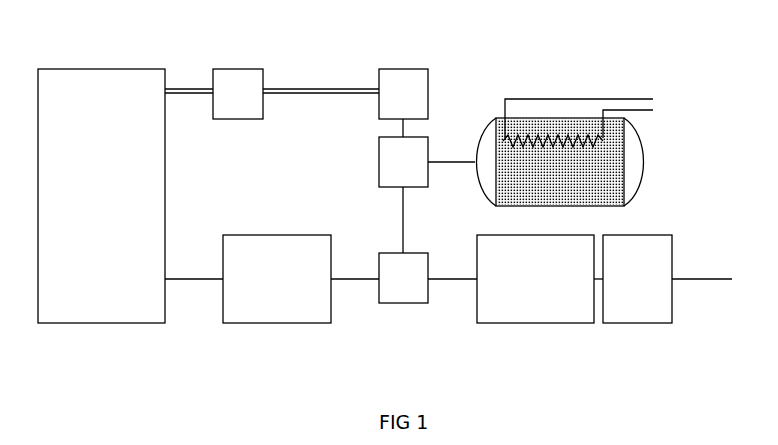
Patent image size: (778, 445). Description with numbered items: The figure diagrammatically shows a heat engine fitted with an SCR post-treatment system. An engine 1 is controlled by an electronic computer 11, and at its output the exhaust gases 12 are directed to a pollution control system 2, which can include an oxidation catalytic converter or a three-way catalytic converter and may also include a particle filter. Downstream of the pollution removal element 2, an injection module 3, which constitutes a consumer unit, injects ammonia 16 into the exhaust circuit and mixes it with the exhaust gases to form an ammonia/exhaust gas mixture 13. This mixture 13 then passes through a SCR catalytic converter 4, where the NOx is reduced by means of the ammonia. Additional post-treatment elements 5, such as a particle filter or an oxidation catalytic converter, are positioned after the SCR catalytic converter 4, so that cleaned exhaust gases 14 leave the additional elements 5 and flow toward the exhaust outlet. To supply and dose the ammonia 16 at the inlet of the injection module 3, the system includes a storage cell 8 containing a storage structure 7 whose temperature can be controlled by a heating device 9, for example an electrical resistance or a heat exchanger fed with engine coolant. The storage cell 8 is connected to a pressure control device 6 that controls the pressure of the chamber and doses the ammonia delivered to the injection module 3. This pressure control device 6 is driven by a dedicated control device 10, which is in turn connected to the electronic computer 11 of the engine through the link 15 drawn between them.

The engine 1 is at (101, 196).
The pollution control system 2 is at (277, 279).
The injection module 3 is at (403, 278).
The SCR catalytic converter 4 is at (535, 279).
The additional post-treatment elements 5 is at (633, 279).
The pressure control device 6 is at (626, 99).
The storage structure 7 is at (560, 162).
The storage cell 8 is at (642, 183).
The heating device 9 is at (403, 153).
The control device 10 is at (403, 94).
The electronic computer 11 is at (238, 94).
The exhaust gases 12 is at (204, 280).
The ammonia/exhaust gas mixture 13 is at (457, 279).
The cleaned exhaust gases 14 is at (403, 225).
The data line 15 is at (302, 88).
The ammonia 16 is at (713, 280).